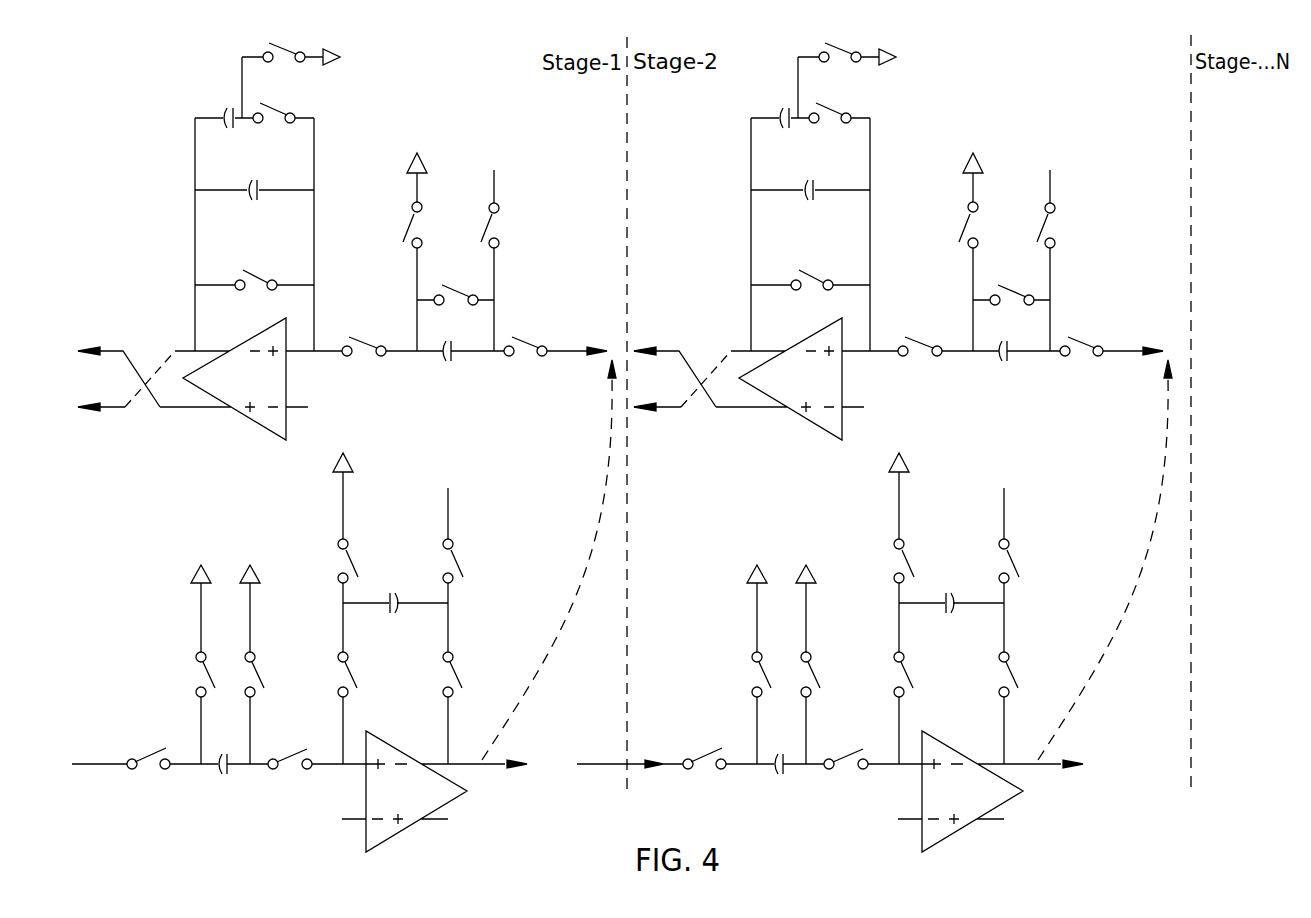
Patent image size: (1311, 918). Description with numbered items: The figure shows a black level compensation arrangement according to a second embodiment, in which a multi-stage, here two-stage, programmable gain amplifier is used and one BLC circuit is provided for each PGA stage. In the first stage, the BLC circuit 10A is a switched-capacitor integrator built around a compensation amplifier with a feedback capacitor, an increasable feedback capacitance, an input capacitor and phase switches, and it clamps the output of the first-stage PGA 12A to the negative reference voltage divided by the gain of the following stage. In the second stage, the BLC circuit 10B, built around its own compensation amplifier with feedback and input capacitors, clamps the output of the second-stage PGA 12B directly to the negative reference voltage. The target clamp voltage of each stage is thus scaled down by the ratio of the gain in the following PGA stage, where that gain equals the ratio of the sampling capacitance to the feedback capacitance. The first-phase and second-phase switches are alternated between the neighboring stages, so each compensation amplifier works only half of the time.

The first-stage BLC circuit 10A is at (135, 105).
The first-stage PGA 12A is at (133, 530).
The second-stage BLC circuit 10B is at (1120, 102).
The second-stage PGA 12B is at (690, 530).